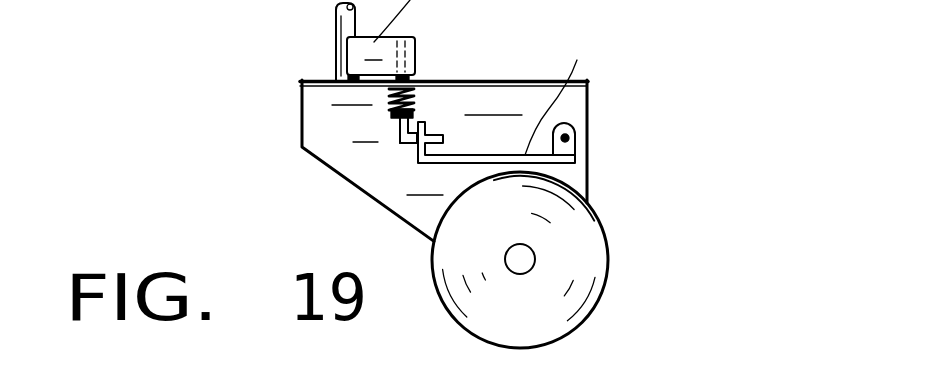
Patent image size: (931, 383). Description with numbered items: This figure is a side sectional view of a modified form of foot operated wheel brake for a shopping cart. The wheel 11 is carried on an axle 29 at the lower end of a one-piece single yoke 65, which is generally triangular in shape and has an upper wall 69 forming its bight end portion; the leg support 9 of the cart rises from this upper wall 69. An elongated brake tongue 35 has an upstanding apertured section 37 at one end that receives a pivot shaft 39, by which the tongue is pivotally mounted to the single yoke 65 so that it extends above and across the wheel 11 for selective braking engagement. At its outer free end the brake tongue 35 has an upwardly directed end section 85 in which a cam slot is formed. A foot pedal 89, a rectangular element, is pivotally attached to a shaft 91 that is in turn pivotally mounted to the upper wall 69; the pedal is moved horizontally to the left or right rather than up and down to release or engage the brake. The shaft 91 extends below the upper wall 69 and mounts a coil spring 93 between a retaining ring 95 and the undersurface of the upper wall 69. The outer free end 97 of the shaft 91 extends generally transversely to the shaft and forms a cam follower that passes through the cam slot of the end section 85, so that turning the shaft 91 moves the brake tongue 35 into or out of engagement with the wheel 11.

The leg support 9 is at (332, 19).
The wheel 11 is at (535, 323).
The axle 29 is at (522, 257).
The brake tongue 35 is at (555, 97).
The upstanding apertured section 37 is at (577, 130).
The pivot shaft 39 is at (572, 140).
The single yoke 65 is at (282, 142).
The upper wall 69 is at (550, 80).
The upwardly directed end section 85 is at (430, 140).
The foot pedal 89 is at (413, 21).
The shaft 91 is at (403, 37).
The coil spring 93 is at (388, 107).
The retaining ring 95 is at (393, 118).
The outer free end 97 is at (404, 146).